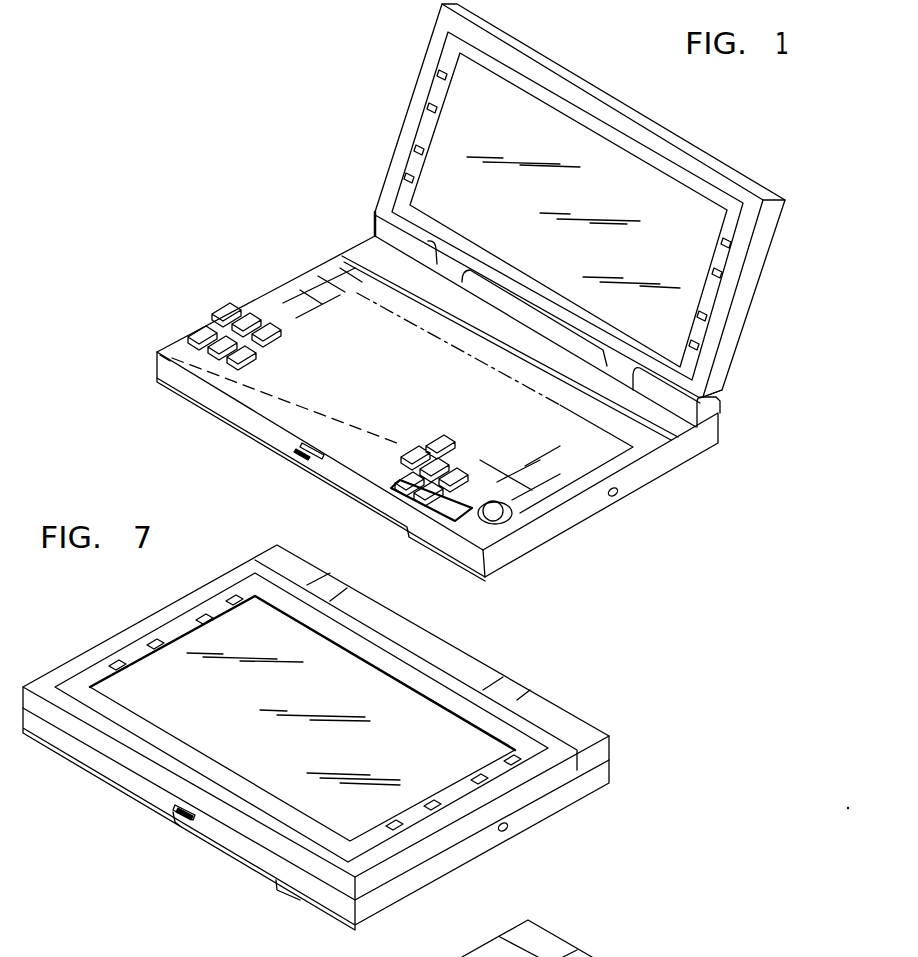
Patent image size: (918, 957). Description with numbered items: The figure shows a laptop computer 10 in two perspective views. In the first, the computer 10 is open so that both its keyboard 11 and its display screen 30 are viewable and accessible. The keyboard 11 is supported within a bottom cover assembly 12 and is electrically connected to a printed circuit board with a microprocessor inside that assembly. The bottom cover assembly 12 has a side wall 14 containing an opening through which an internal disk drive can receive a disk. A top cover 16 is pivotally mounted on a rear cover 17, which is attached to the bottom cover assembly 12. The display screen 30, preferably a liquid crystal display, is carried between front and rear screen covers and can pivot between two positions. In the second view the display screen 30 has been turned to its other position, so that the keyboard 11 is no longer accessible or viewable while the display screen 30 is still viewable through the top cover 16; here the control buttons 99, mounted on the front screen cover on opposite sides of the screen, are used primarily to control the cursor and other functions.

In FIG. 1, the laptop computer 10 is at (213, 281).
In FIG. 7, the laptop computer 10 is at (237, 880).
In FIG. 1, the keyboard 11 is at (280, 300).
In FIG. 1, the bottom cover assembly 12 is at (565, 527).
In FIG. 7, the bottom cover assembly 12 is at (527, 826).
In FIG. 1, the side wall 14 is at (158, 352).
In FIG. 1, the top cover 16 is at (413, 88).
In FIG. 7, the top cover 16 is at (547, 793).
In FIG. 1, the rear cover 17 is at (358, 238).
In FIG. 1, the display screen 30 is at (697, 238).
In FIG. 7, the display screen 30 is at (382, 702).
In FIG. 1, the control buttons 99 is at (420, 148).
In FIG. 7, the control buttons 99 is at (477, 773).